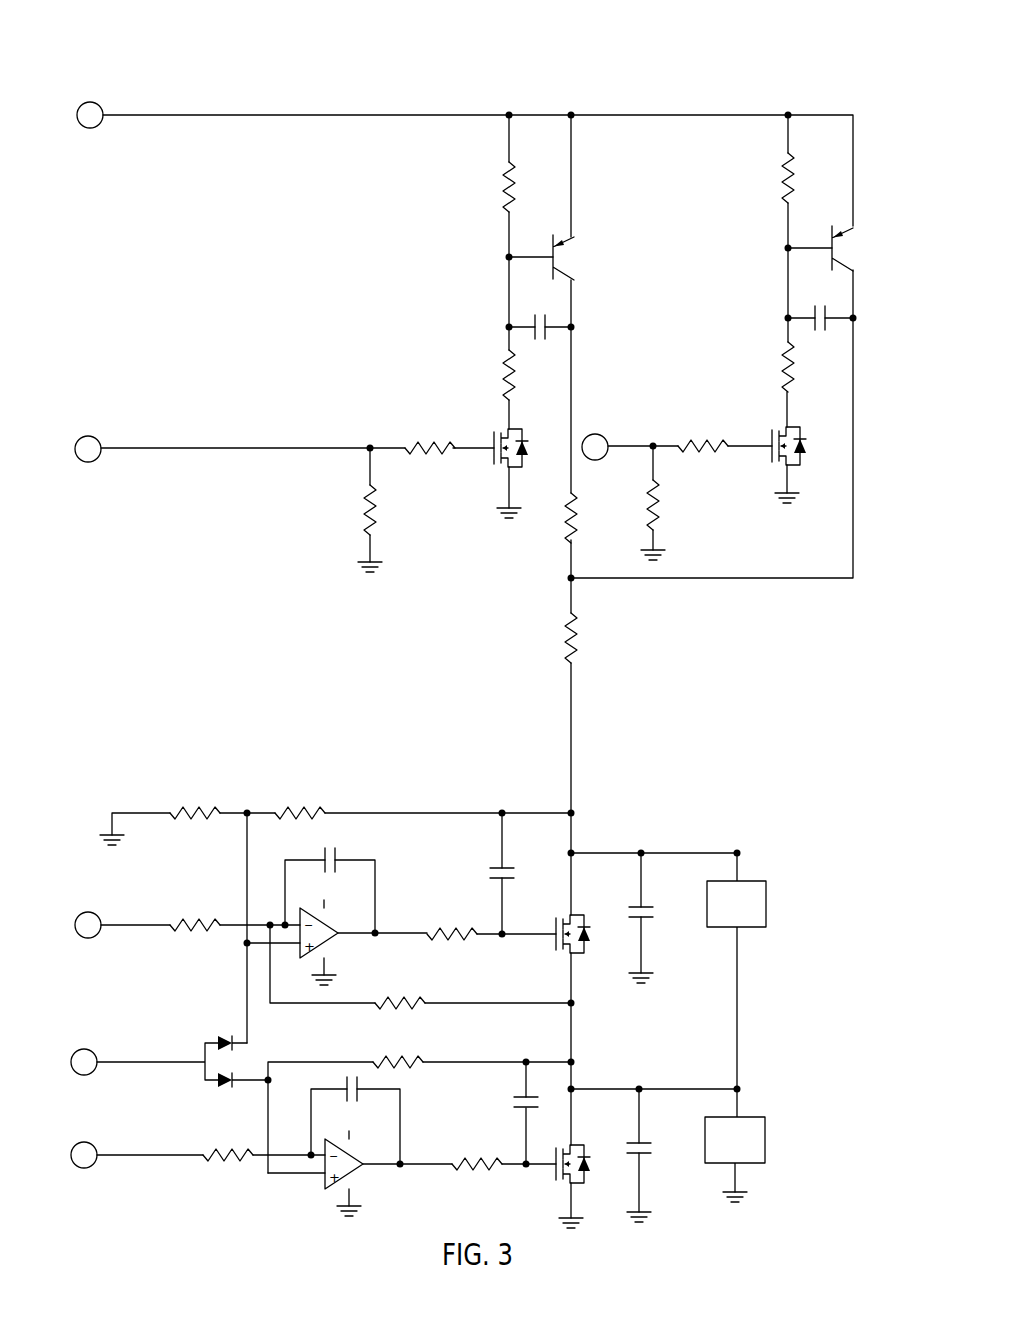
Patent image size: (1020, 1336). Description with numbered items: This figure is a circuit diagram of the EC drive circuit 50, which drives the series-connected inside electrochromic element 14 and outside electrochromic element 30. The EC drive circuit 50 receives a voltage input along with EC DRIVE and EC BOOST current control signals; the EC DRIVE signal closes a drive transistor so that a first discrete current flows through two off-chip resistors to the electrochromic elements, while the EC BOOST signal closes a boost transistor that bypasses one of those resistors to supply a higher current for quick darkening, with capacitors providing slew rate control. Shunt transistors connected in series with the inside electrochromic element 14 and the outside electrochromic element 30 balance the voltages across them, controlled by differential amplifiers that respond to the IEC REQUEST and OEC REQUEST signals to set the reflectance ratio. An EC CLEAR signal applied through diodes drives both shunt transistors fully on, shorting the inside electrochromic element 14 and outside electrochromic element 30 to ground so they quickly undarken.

The EC drive circuit 50 is at (716, 45).
The inside electrochromic element 14 is at (757, 880).
The outside electrochromic element 30 is at (757, 1116).